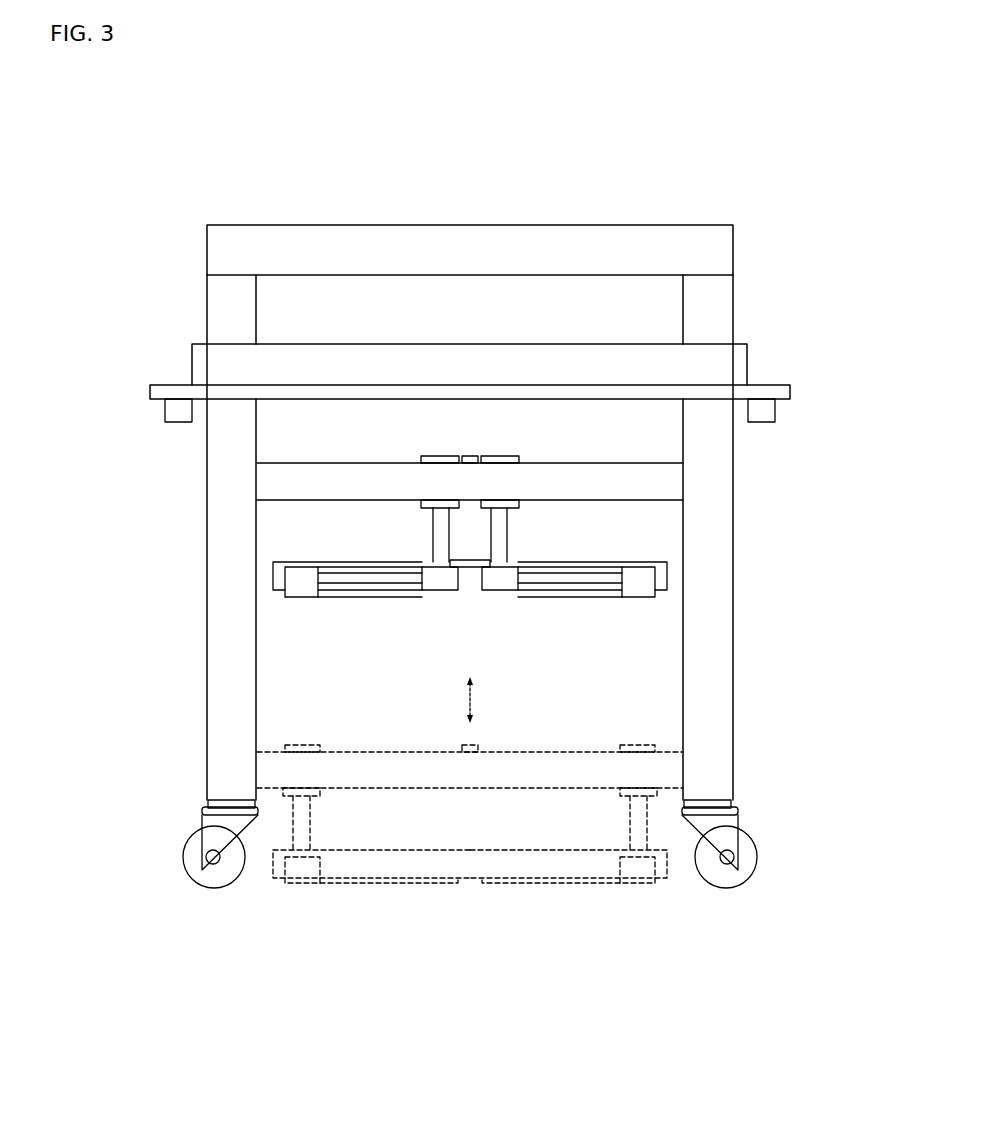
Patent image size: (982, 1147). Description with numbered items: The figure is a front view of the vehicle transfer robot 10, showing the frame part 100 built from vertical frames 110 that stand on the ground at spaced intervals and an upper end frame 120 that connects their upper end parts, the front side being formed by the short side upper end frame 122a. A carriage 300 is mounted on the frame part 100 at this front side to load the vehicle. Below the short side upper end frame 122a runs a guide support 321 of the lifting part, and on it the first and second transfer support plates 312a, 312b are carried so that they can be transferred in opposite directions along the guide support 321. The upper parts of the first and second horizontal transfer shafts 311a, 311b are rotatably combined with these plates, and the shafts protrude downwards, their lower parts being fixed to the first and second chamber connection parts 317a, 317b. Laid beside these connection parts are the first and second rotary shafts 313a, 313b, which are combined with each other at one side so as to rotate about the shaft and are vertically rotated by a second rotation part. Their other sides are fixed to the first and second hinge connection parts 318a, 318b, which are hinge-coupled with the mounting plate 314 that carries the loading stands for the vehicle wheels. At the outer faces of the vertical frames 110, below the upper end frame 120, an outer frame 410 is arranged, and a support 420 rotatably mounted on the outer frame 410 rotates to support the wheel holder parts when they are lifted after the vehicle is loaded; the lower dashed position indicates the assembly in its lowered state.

The vehicle transfer robot 10 is at (147, 150).
The frame part 100 is at (454, 504).
The vertical frames 110 is at (227, 555).
The upper end frame 120 is at (470, 197).
The short side upper end frame 122a is at (470, 225).
The carriage 300 is at (471, 691).
The first horizontal transfer shaft 311a is at (437, 535).
The second horizontal transfer shaft 311b is at (502, 537).
The first transfer support plate 312a is at (440, 455).
The second transfer support plate 312b is at (500, 455).
The first rotary shaft 313a is at (350, 595).
The second rotary shaft 313b is at (578, 595).
The mounting plate 314 is at (302, 597).
The first chamber connection part 317a is at (435, 592).
The second chamber connection part 317b is at (500, 592).
The first hinge connection part 318a is at (277, 577).
The second hinge connection part 318b is at (667, 577).
The guide support 321 is at (670, 482).
The outer frame 410 is at (751, 362).
The support 420 is at (774, 405).